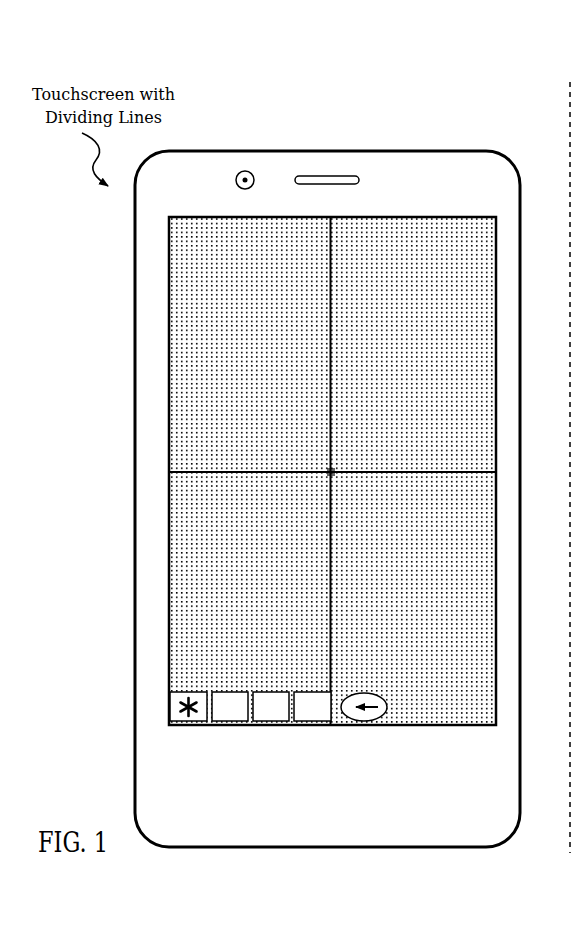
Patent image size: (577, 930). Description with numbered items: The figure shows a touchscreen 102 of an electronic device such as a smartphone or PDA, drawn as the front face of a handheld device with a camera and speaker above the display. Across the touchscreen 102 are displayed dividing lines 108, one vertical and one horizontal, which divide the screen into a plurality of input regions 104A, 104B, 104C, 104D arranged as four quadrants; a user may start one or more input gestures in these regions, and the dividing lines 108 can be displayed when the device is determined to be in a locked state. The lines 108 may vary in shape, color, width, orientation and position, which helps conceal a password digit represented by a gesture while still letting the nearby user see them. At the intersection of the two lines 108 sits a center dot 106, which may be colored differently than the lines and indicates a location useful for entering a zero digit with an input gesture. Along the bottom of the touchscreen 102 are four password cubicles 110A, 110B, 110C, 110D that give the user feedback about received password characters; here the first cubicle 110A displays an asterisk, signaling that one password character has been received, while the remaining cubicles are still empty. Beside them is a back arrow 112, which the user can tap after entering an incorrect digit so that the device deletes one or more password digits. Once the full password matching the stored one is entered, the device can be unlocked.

The touchscreen 102 is at (168, 216).
The input region 104A is at (268, 353).
The input region 104B is at (432, 353).
The input region 104C is at (268, 606).
The input region 104D is at (432, 606).
The center dot 106 is at (336, 469).
The dividing lines 108 is at (328, 490).
The password cubicle 110A is at (181, 692).
The password cubicle 110B is at (228, 722).
The password cubicle 110C is at (272, 684).
The password cubicle 110D is at (312, 722).
The back arrow 112 is at (377, 722).